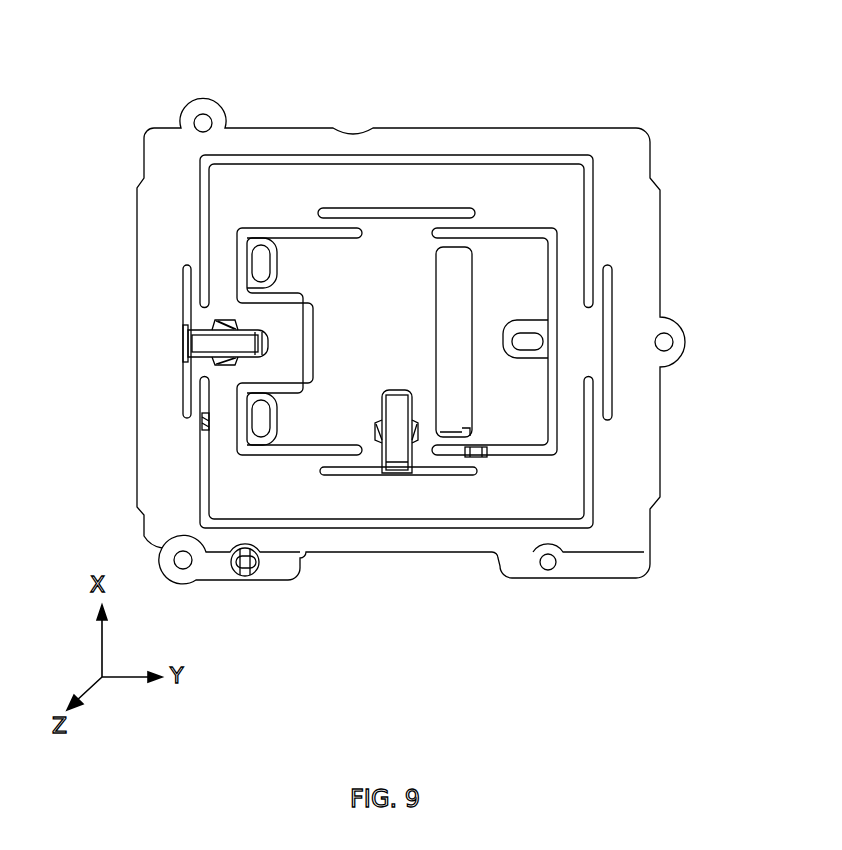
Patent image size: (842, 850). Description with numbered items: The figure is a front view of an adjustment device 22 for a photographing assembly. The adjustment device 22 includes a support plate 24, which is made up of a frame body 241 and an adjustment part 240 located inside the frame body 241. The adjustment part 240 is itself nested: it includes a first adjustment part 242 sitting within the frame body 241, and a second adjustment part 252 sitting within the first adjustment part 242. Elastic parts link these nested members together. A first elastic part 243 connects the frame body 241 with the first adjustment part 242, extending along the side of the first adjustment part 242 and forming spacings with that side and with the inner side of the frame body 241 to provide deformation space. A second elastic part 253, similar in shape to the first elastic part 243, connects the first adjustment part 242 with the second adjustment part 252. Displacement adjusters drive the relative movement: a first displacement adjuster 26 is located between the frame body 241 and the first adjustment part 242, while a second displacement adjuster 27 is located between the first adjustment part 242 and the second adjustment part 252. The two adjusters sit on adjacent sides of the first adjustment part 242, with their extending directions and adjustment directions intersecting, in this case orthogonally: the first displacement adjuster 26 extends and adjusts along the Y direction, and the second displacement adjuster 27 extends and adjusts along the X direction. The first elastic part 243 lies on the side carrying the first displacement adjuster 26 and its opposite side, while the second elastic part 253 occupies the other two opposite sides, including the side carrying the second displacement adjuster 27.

The adjustment device 22 is at (392, 334).
The support plate 24 is at (430, 133).
The adjustment part 240 is at (572, 203).
The frame body 241 is at (561, 150).
The first adjustment part 242 is at (235, 203).
The first elastic part 243 is at (193, 296).
The second adjustment part 252 is at (295, 273).
The second elastic part 253 is at (350, 462).
The first displacement adjuster 26 is at (213, 343).
The second displacement adjuster 27 is at (397, 445).